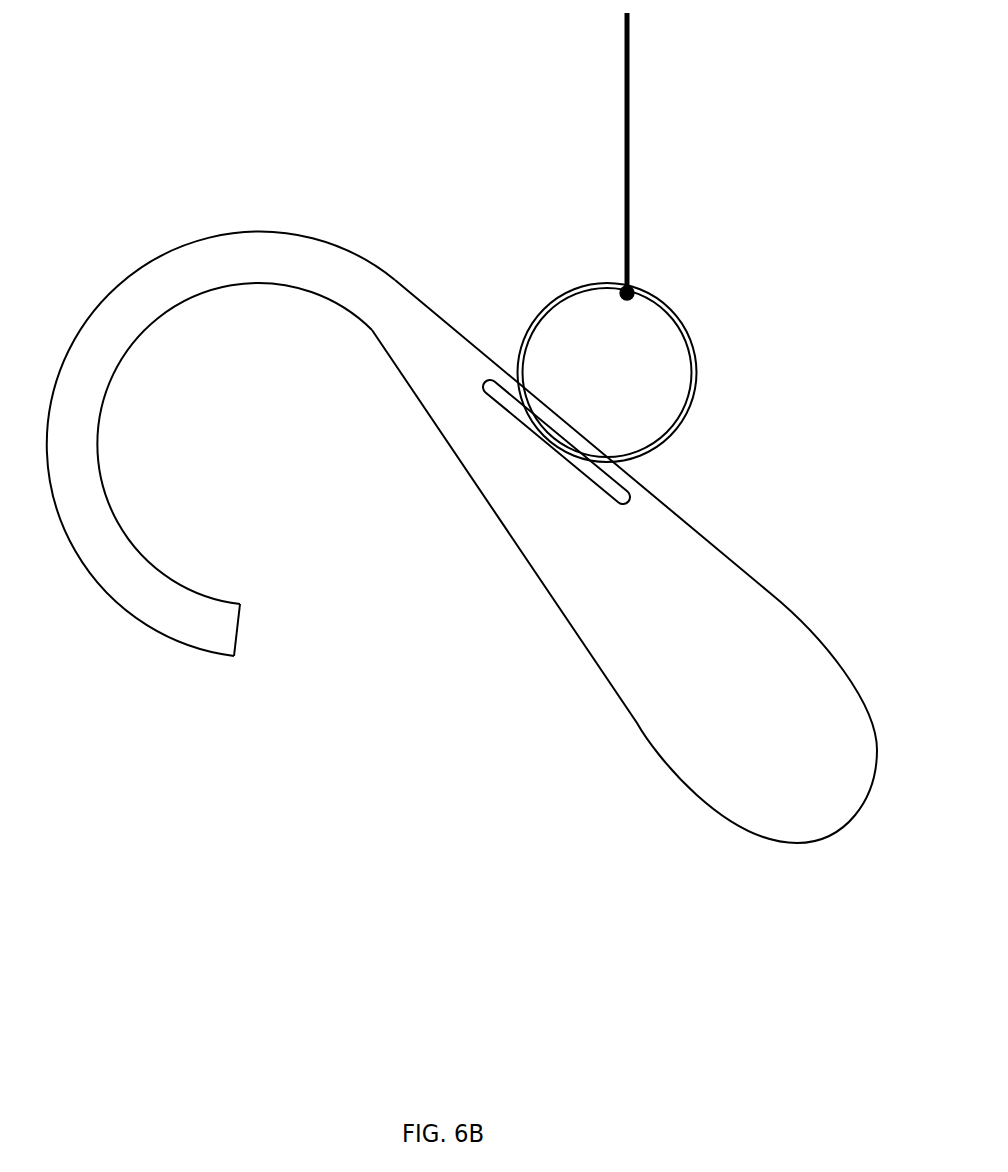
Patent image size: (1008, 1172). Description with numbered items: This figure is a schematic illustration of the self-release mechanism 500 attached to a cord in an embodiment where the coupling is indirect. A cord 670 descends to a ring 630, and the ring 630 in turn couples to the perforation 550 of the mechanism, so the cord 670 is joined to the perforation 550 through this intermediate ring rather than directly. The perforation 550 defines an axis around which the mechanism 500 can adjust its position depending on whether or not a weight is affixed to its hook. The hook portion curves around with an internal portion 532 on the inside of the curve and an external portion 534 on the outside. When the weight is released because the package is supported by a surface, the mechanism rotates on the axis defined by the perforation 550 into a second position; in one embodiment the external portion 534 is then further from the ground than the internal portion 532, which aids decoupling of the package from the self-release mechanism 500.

The self-release mechanism 500 is at (462, 502).
The internal portion 532 is at (234, 443).
The external portion 534 is at (221, 409).
The perforation 550 is at (507, 442).
The ring 630 is at (648, 368).
The cord 670 is at (623, 104).